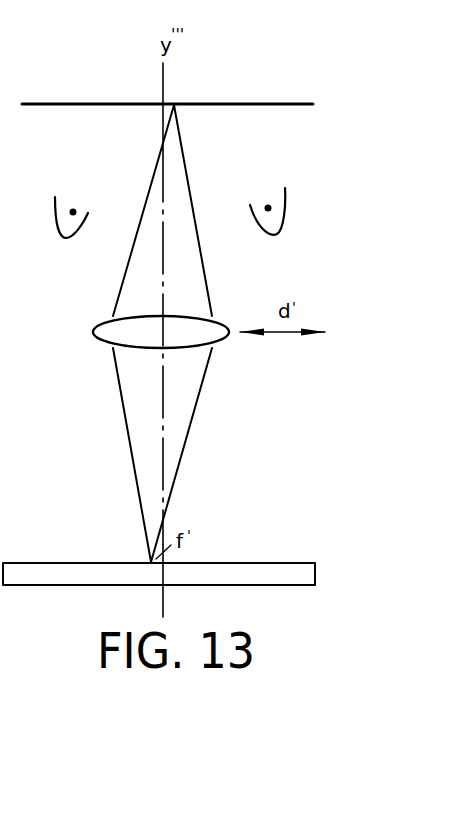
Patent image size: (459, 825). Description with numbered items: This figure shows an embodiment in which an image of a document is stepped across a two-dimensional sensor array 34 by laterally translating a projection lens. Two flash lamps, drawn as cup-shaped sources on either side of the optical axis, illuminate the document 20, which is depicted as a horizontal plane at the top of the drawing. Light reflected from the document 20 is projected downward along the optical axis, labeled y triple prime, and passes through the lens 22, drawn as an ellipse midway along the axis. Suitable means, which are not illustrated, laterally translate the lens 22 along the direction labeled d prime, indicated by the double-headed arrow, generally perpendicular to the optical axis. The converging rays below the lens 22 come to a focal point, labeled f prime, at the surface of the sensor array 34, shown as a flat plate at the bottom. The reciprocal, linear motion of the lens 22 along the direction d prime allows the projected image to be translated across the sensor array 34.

The document 20 is at (263, 104).
The lens 22 is at (222, 338).
The sensor array 34 is at (250, 563).